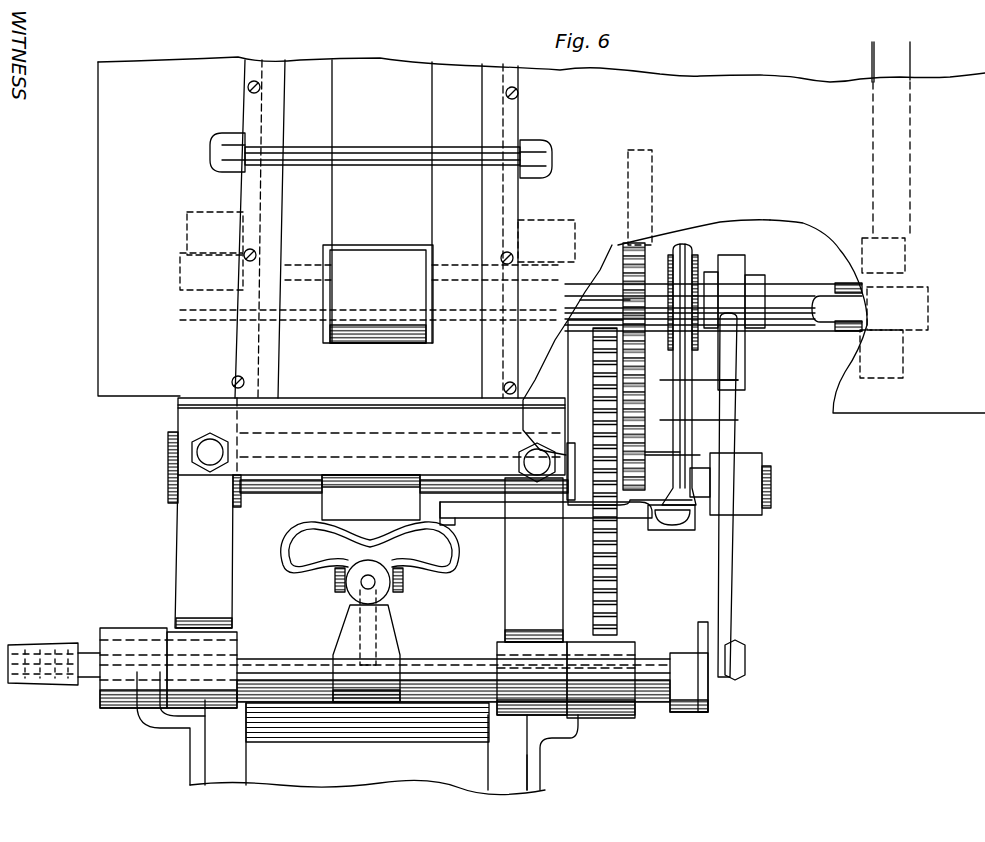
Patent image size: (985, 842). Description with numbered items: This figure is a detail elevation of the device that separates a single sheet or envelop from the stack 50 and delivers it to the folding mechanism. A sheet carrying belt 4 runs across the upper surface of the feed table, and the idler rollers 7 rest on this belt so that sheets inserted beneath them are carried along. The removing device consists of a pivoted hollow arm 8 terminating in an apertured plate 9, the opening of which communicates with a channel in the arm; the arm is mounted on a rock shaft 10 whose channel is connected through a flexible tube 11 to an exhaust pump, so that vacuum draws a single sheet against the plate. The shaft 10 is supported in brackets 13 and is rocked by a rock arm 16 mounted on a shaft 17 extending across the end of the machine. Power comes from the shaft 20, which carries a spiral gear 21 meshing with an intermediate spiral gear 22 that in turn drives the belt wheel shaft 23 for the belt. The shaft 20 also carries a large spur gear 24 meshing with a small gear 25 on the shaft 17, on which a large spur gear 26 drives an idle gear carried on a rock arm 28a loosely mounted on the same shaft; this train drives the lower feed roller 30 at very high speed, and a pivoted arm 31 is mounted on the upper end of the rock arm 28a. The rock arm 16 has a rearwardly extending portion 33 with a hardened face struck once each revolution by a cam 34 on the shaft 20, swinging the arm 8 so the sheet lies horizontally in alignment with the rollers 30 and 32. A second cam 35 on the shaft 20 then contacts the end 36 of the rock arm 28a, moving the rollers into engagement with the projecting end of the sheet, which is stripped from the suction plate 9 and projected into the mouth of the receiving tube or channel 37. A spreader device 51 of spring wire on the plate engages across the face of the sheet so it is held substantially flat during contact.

The sheet carrying belt 4 is at (410, 217).
The idler rollers 7 is at (420, 152).
The pivoted hollow arm 8 is at (395, 628).
The apertured plate 9 is at (395, 580).
The rock shaft 10 is at (455, 668).
The flexible tube 11 is at (60, 683).
The brackets 13 is at (369, 558).
The rock arm 16 is at (728, 596).
The shaft 17 is at (772, 487).
The shaft 20 is at (770, 290).
The spiral gear 21 is at (906, 365).
The intermediate spiral gear 22 is at (842, 331).
The belt wheel shaft 23 is at (598, 250).
The spur gear 24 is at (652, 180).
The small gear 25 is at (645, 463).
The spur gear 26 is at (612, 588).
The rock arm 28a is at (680, 410).
The lower feed roller 30 is at (378, 470).
The pivoted arm 31 is at (536, 518).
The roller 32 is at (404, 497).
The rearwardly extending portion 33 is at (735, 385).
The cam 34 is at (740, 255).
The cam 35 is at (705, 250).
The end 36 is at (688, 243).
The receiving tube or channel 37 is at (378, 314).
The stack 50 is at (433, 745).
The spreader device 51 is at (300, 570).